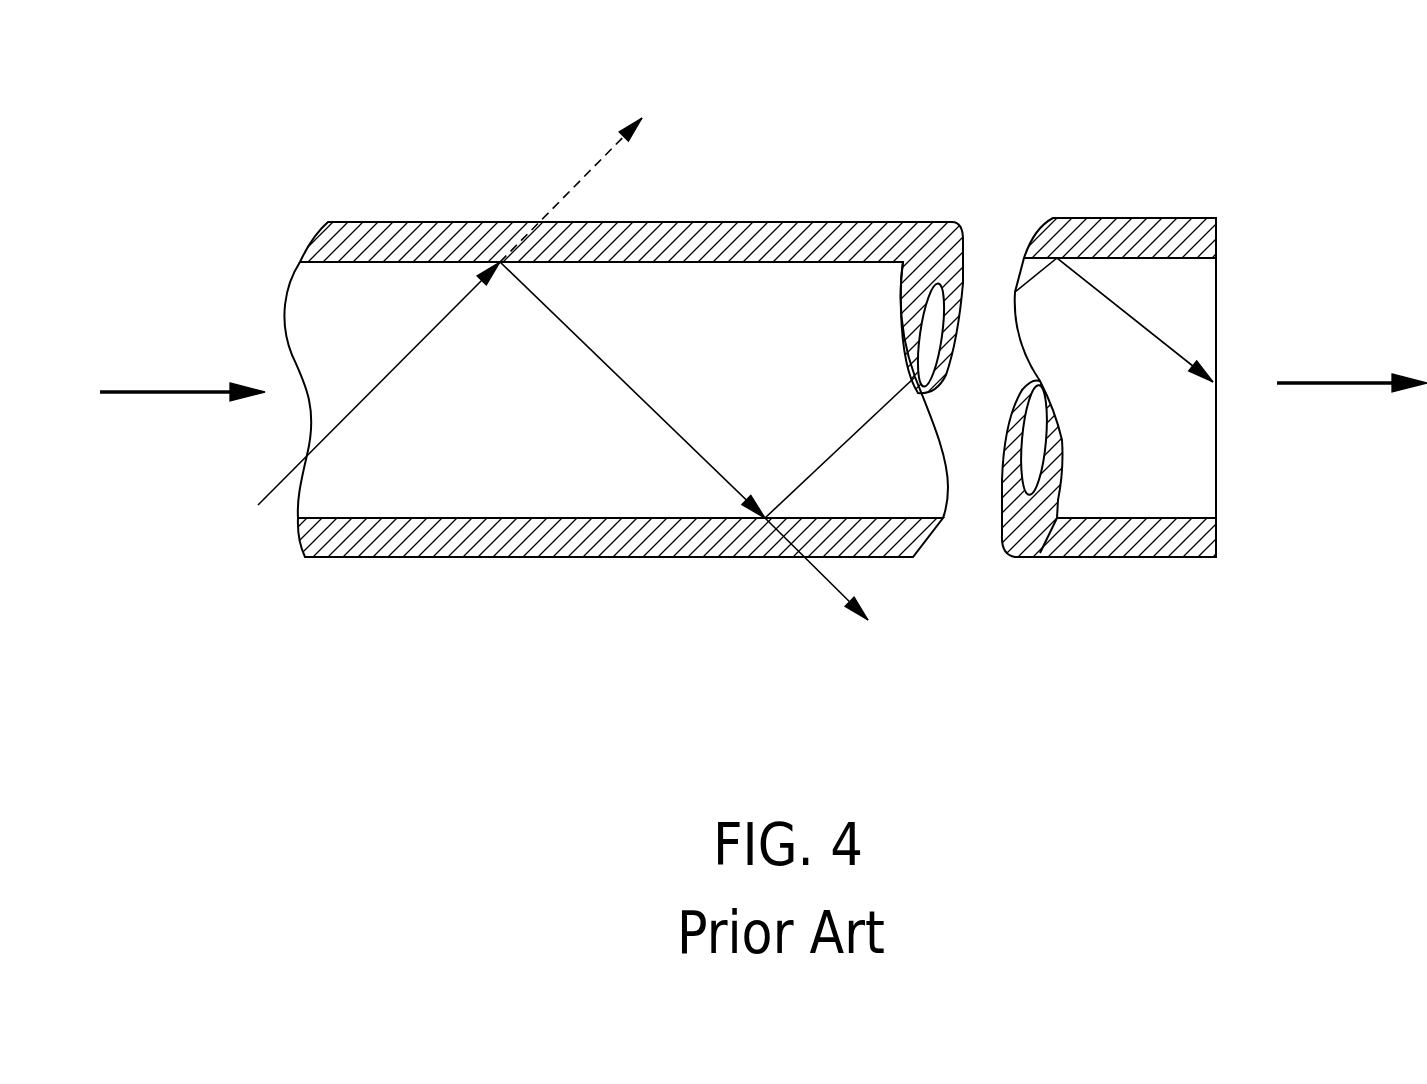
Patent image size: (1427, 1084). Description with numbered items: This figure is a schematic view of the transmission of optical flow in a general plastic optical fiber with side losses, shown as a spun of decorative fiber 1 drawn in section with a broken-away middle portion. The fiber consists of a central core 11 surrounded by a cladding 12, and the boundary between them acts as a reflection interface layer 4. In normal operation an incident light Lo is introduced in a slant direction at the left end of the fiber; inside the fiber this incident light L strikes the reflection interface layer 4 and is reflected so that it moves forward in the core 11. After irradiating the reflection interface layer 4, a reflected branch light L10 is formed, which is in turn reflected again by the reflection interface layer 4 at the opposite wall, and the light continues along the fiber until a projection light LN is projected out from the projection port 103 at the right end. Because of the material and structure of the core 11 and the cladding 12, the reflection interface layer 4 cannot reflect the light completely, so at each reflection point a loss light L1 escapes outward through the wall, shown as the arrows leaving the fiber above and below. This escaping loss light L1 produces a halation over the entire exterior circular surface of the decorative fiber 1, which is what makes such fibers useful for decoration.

The decorative fiber 1 is at (531, 406).
The core 11 is at (330, 320).
The cladding 12 is at (355, 252).
The reflection interface layer 4 is at (797, 222).
The projection port 103 is at (1214, 371).
The incident light L is at (383, 385).
The loss light L1 is at (573, 185).
The branch light L10 is at (628, 380).
The incident light Lo is at (182, 375).
The projection light LN is at (1221, 325).